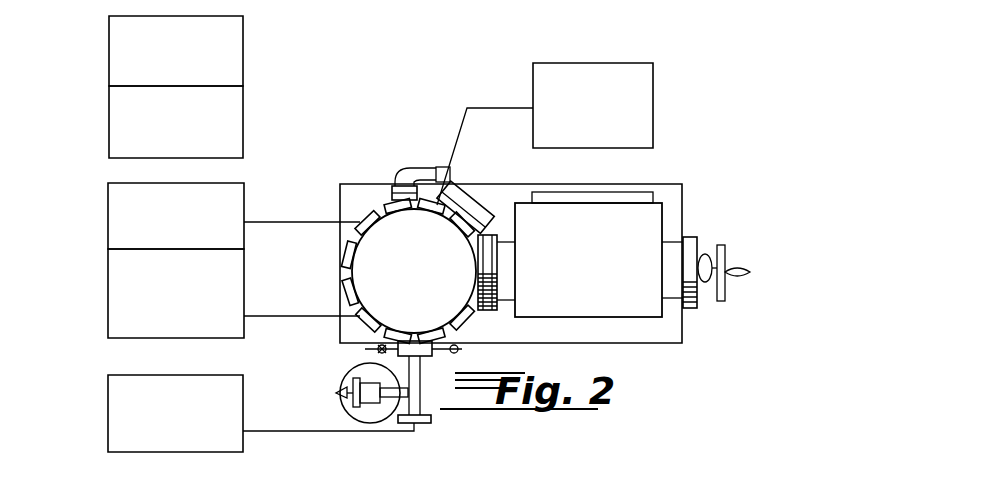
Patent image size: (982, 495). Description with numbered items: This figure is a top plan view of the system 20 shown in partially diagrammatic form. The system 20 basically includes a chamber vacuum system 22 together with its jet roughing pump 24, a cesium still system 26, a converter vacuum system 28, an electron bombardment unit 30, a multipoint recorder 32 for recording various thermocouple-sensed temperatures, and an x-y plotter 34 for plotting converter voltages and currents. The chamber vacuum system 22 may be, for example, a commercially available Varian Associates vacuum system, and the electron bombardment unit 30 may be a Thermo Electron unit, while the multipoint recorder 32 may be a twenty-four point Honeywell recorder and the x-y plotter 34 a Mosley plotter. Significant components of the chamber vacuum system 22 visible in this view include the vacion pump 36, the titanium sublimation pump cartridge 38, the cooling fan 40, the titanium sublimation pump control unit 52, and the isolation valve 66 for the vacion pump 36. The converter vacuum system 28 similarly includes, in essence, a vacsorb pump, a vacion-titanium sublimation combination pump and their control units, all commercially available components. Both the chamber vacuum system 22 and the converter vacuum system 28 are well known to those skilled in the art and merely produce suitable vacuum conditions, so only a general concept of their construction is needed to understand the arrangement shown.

The system 20 is at (705, 74).
The chamber vacuum system 22 is at (638, 318).
The jet roughing pump 24 is at (108, 416).
The cesium still system 26 is at (109, 123).
The converter vacuum system 28 is at (109, 51).
The electron bombardment unit 30 is at (653, 108).
The multipoint recorder 32 is at (108, 304).
The x-y plotter 34 is at (108, 212).
The vacion pump 36 is at (665, 225).
The titanium sublimation pump cartridge 38 is at (408, 168).
The cooling fan 40 is at (463, 196).
The titanium sublimation pump control unit 52 is at (660, 187).
The isolation valve 66 is at (768, 254).